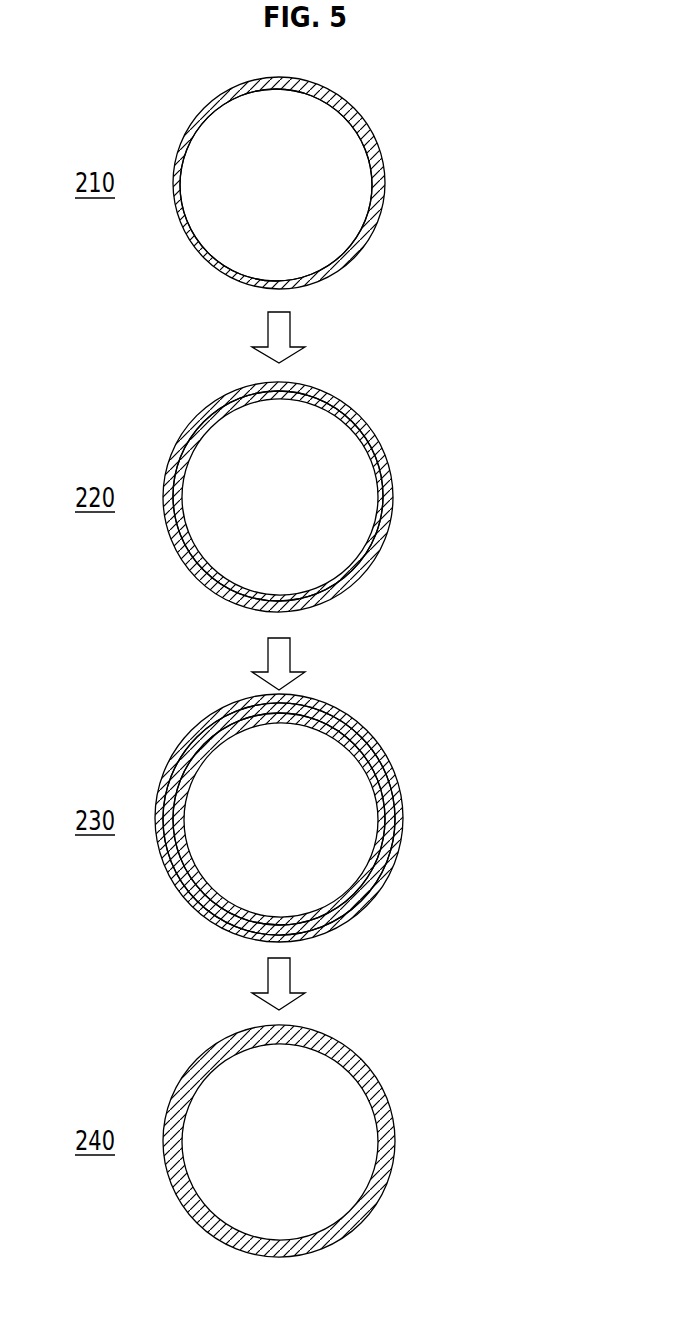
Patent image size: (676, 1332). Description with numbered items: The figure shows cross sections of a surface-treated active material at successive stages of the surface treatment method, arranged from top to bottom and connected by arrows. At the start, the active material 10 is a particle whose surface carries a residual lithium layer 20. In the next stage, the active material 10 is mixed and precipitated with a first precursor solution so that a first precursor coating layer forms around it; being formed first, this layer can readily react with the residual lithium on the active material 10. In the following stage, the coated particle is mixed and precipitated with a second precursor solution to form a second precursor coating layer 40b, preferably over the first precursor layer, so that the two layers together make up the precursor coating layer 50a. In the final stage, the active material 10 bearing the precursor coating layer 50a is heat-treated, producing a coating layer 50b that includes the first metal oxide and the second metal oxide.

The active material 10 is at (335, 123).
The residual lithium layer 20 is at (380, 150).
The second precursor coating layer 40b is at (395, 788).
The precursor coating layer 50a is at (349, 818).
The coating layer 50b is at (390, 1120).